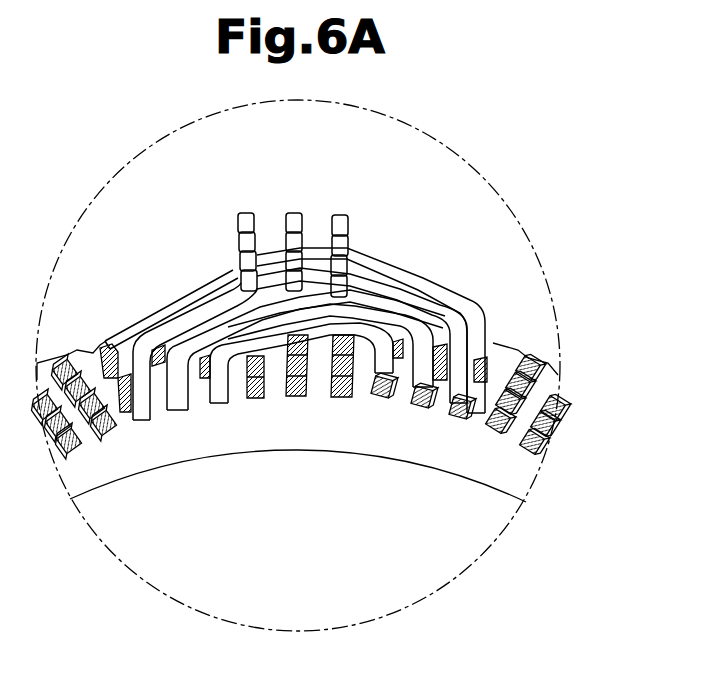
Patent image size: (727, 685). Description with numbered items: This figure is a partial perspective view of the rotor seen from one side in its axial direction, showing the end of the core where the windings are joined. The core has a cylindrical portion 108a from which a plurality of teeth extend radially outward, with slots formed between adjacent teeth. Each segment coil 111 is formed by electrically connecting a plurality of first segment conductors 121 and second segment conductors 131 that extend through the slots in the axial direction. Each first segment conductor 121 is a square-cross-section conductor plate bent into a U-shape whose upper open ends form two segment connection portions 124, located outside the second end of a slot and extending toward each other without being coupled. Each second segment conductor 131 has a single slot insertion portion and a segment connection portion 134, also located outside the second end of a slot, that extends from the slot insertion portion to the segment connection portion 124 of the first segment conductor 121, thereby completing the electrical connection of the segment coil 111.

The cylindrical portion 108a is at (522, 487).
The segment coil 111 is at (478, 281).
The first segment conductor 121 is at (308, 253).
The segment connection portion 124 is at (274, 248).
The second segment conductor 131 is at (487, 322).
The segment connection portion 134 is at (222, 328).